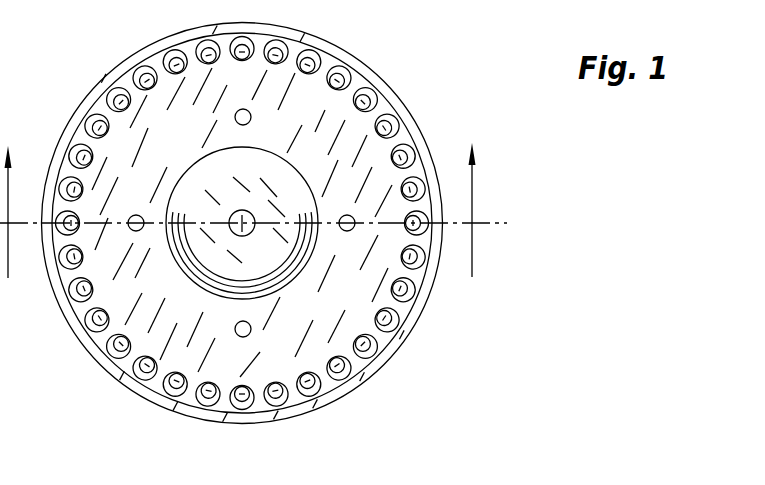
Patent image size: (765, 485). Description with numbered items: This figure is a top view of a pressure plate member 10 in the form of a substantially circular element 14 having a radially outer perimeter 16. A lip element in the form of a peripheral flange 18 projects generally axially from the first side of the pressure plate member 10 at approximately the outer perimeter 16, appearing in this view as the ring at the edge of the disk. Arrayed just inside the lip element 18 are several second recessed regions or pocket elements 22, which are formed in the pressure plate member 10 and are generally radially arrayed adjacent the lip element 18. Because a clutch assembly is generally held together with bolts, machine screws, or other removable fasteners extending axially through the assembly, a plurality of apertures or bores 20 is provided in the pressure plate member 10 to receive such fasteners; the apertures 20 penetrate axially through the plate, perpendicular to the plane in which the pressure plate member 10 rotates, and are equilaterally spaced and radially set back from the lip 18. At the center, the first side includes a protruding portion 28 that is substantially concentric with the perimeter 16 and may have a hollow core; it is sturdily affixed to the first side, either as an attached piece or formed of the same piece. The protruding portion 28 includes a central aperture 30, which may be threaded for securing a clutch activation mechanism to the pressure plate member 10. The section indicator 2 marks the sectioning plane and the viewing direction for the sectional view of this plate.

The pressure plate member 10 is at (470, 298).
The section line 2- 2 is at (251, 210).
The substantially circular element 14 is at (185, 155).
The radially outer perimeter 16 is at (422, 308).
The peripheral flange 18 is at (185, 410).
The apertures 20 is at (251, 117).
The pocket elements 22 is at (413, 241).
The protruding portion 28 is at (218, 257).
The central aperture 30 is at (243, 236).